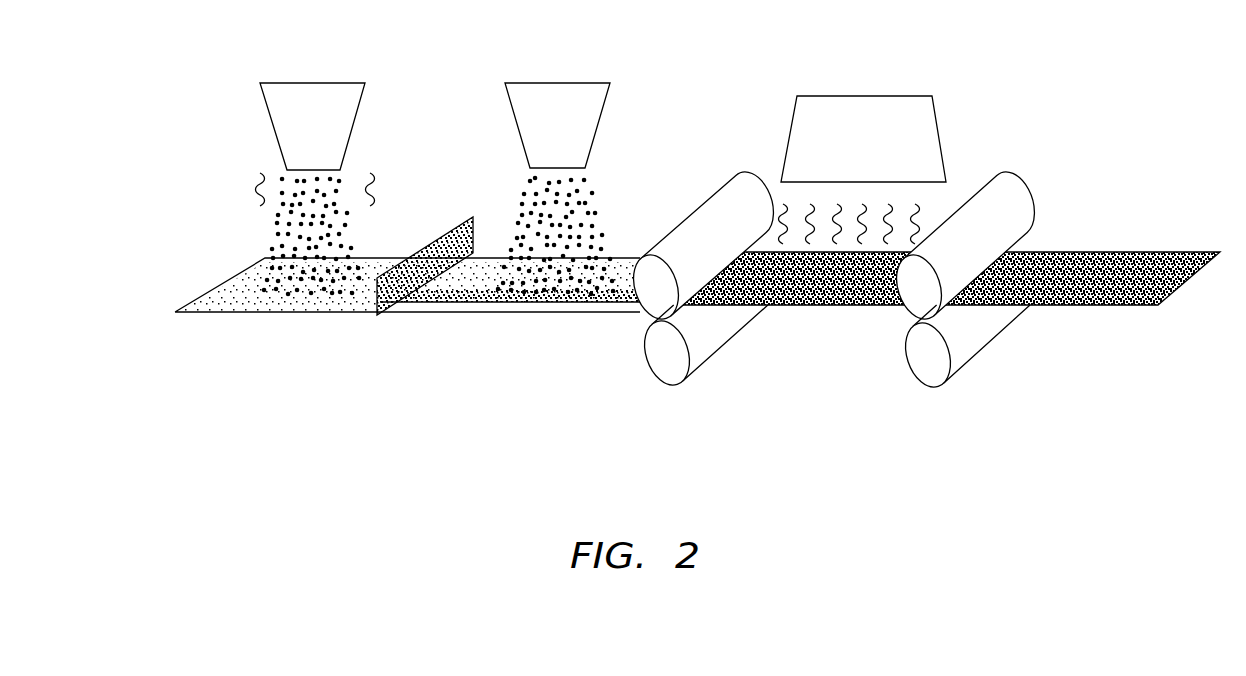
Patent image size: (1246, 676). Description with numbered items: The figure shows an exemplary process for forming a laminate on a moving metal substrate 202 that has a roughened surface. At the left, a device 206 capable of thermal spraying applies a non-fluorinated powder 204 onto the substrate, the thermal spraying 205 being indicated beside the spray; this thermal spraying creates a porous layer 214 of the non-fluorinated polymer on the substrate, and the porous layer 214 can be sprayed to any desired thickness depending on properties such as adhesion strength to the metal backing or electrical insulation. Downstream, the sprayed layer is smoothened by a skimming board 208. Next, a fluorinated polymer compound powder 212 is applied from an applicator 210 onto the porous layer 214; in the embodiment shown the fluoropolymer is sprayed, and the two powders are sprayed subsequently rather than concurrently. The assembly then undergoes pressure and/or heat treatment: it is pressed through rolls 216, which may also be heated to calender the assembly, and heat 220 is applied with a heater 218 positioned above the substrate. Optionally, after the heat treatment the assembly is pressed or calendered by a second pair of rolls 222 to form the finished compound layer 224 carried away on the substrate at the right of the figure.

The metal substrate 202 is at (175, 312).
The non-fluorinated powder 204 is at (265, 250).
The thermal spraying 205 is at (258, 182).
The device capable of thermal spraying 206 is at (315, 83).
The skimming board 208 is at (378, 300).
The applicator 210 is at (557, 83).
The fluorinated polymer compound powder 212 is at (595, 207).
The porous layer 214 is at (517, 302).
The rolls 216 is at (740, 172).
The heater 218 is at (885, 96).
The heat 220 is at (917, 216).
The second pair of rollers 222 is at (1017, 178).
The compound layer 224 is at (1105, 310).